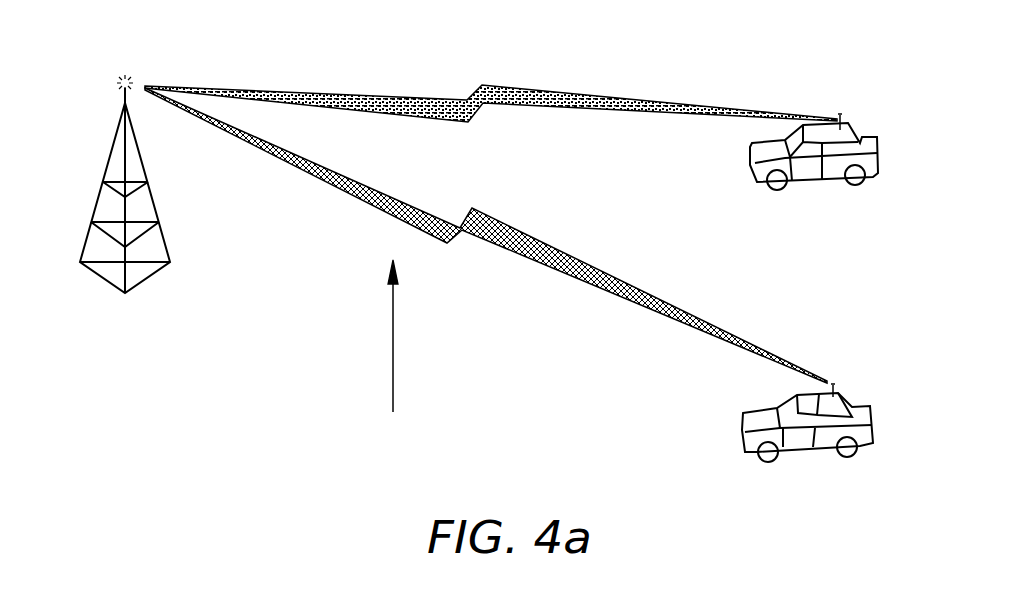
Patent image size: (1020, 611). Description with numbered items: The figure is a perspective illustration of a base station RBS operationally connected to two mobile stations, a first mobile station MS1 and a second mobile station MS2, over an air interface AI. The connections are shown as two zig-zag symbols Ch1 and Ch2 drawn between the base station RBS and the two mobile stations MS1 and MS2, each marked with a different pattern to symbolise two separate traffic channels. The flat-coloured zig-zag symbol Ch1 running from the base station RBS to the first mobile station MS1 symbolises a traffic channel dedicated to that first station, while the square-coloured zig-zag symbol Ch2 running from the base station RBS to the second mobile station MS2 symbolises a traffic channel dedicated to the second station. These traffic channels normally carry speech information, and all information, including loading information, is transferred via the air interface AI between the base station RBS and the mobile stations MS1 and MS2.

The base station RBS is at (152, 193).
The zig-zag symbol Ch1 is at (537, 90).
The zig-zag symbol Ch2 is at (533, 238).
The first mobile station MS1 is at (862, 133).
The second mobile station MS2 is at (853, 407).
The air interface AI is at (405, 448).